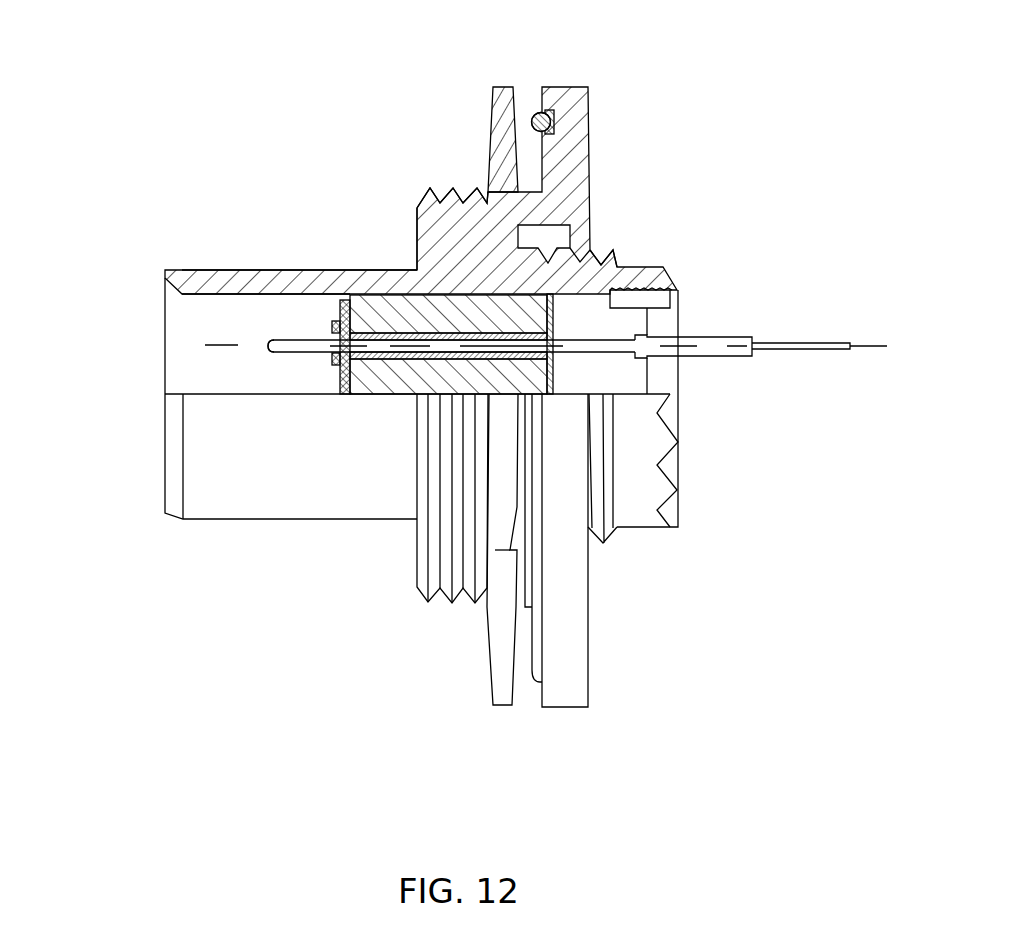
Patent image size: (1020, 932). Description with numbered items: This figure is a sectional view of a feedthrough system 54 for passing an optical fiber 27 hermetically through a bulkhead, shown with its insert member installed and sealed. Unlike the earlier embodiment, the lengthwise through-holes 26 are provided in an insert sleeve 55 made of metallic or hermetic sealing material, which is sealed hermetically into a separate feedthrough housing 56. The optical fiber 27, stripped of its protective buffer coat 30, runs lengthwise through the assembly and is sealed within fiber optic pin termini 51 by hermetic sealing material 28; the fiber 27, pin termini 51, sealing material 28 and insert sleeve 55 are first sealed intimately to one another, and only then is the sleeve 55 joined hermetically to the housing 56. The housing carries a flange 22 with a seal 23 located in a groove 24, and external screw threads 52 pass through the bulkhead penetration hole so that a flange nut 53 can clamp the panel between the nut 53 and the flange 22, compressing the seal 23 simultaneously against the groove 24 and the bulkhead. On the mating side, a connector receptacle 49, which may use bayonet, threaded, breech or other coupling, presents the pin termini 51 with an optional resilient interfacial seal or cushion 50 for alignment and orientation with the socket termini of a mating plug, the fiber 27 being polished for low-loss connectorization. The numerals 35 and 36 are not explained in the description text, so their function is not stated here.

The flange 22 is at (595, 153).
The seal 23 is at (532, 120).
The groove 24 is at (575, 88).
The lengthwise through-holes 26 is at (337, 277).
The optical fiber 27 is at (238, 345).
The hermetic sealing material 28 is at (398, 357).
The protective buffer coat 30 is at (767, 340).
The external thread 35 is at (590, 250).
The mounting wall 36 is at (672, 477).
The connector receptacle 49 is at (220, 285).
The resilient interfacial seal/cushion 50 is at (337, 322).
The fiber optic pin termini 51 is at (297, 350).
The external screw threads 52 is at (450, 603).
The flange nut 53 is at (507, 645).
The feedthrough system 54 is at (417, 220).
The insert sleeve 55 is at (398, 273).
The feedthrough housing 56 is at (467, 257).